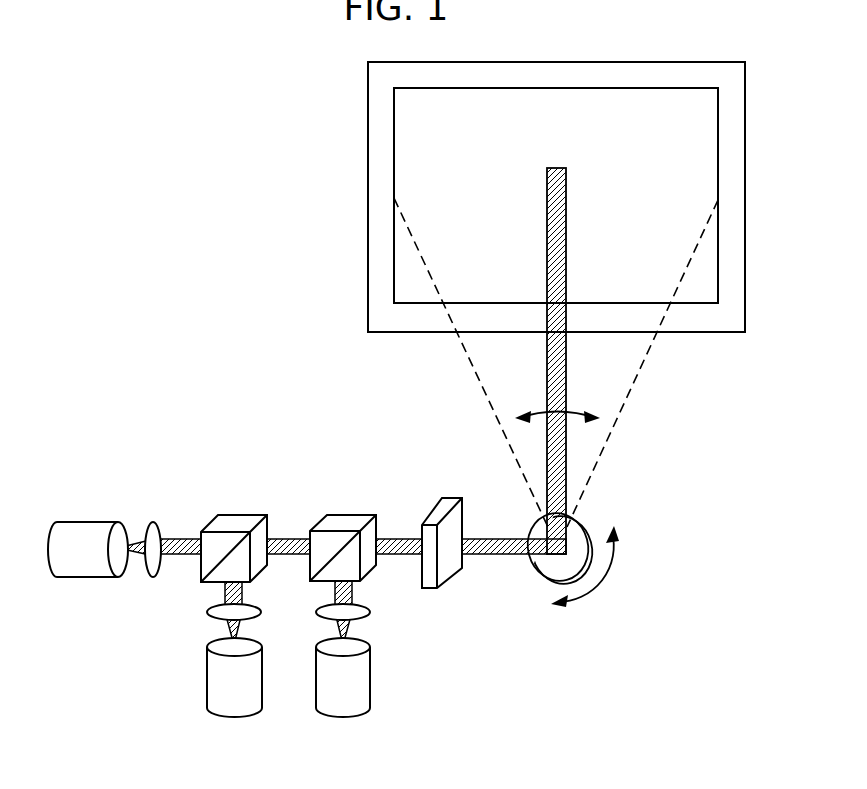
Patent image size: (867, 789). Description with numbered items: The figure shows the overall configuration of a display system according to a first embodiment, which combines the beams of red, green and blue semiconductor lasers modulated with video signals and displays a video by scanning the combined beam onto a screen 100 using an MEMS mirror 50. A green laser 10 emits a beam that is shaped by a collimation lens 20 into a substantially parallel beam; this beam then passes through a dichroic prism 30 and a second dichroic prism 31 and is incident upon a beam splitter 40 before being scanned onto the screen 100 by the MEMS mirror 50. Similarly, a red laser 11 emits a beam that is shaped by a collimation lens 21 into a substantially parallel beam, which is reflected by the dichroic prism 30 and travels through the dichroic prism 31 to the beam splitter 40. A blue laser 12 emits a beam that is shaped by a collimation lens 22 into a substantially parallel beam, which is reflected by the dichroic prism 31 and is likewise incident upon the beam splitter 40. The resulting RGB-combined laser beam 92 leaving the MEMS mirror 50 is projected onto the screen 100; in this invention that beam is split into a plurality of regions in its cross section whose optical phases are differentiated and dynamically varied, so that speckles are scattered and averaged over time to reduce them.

The screen 100 is at (367, 117).
The laser beam 92 is at (567, 222).
The MEMS mirror 50 is at (585, 521).
The green laser 10 is at (85, 521).
The collimation lens 20 is at (152, 521).
The dichroic prism 30 is at (234, 521).
The dichroic prism 31 is at (344, 521).
The beam splitter 40 is at (442, 509).
The collimation lens 21 is at (207, 612).
The collimation lens 22 is at (371, 612).
The red laser 11 is at (207, 678).
The blue laser 12 is at (371, 677).